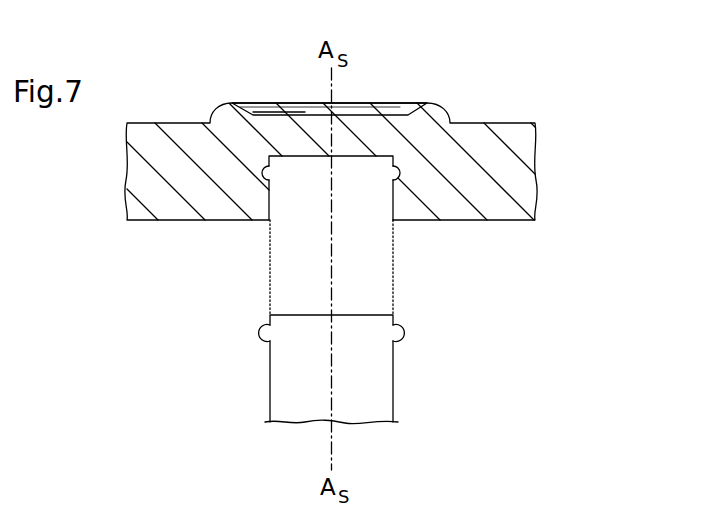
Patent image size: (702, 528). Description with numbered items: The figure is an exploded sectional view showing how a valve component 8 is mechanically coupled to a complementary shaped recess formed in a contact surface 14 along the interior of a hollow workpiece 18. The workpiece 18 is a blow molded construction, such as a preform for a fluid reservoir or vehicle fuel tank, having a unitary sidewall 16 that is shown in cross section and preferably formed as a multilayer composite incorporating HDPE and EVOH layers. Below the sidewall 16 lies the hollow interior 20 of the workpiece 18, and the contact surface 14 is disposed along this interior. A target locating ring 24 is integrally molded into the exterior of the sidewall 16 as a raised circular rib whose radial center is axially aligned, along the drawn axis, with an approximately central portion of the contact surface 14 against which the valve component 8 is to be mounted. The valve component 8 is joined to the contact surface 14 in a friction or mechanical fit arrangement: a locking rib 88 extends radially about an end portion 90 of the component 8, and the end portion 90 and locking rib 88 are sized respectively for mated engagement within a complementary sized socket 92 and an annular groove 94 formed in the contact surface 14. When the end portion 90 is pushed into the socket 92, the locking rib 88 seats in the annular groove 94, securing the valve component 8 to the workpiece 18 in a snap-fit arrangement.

The valve component 8 is at (400, 377).
The contact surface 14 is at (383, 205).
The sidewall 16 is at (197, 181).
The workpiece 18 is at (518, 175).
The hollow interior 20 is at (518, 300).
The target locating ring 24 is at (422, 103).
The locking rib 88 is at (263, 334).
The end portion 90 is at (292, 398).
The socket 92 is at (315, 202).
The annular groove 94 is at (268, 177).